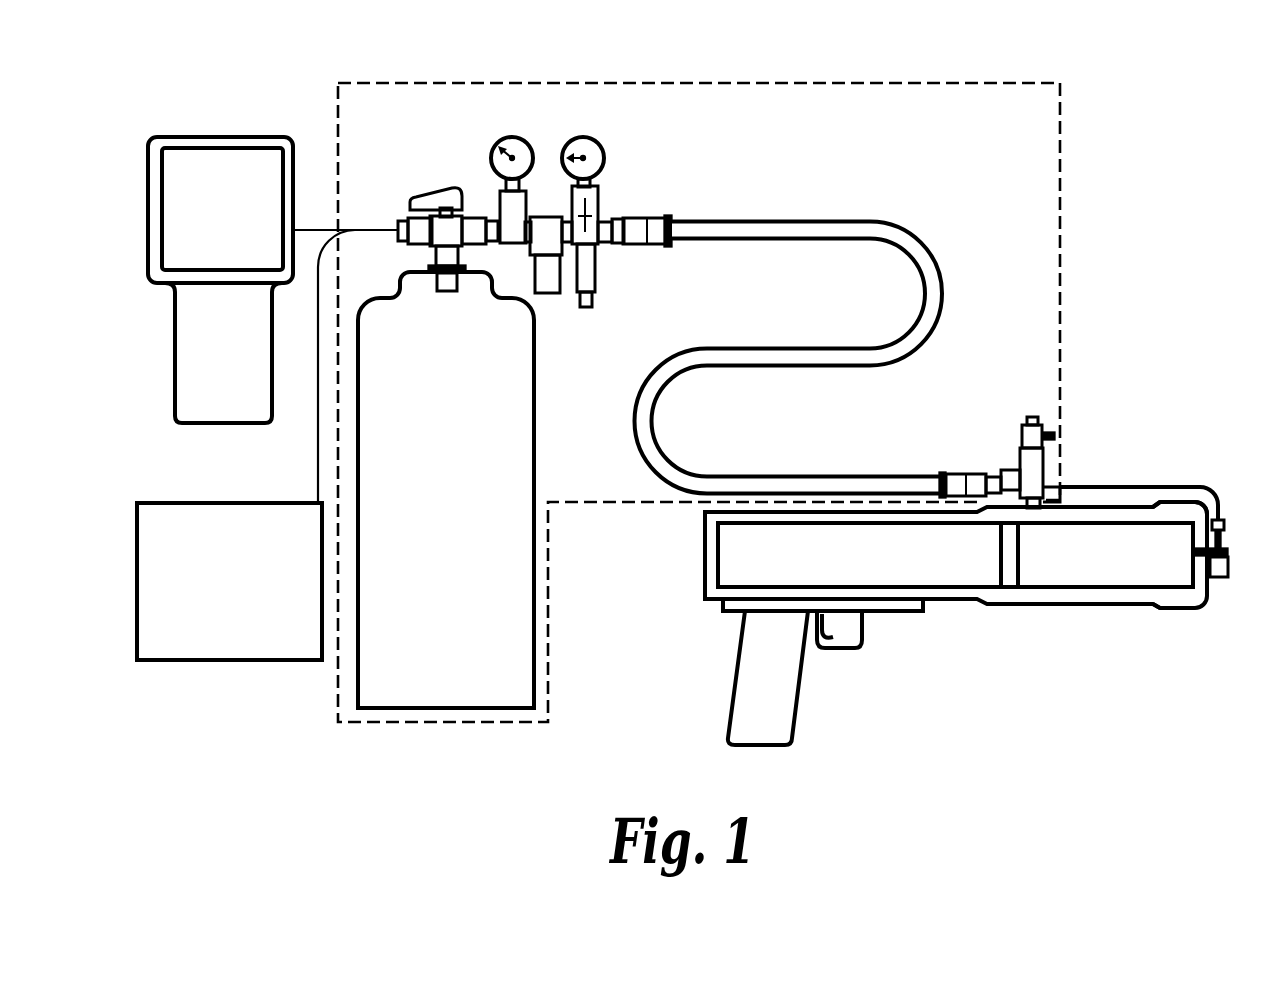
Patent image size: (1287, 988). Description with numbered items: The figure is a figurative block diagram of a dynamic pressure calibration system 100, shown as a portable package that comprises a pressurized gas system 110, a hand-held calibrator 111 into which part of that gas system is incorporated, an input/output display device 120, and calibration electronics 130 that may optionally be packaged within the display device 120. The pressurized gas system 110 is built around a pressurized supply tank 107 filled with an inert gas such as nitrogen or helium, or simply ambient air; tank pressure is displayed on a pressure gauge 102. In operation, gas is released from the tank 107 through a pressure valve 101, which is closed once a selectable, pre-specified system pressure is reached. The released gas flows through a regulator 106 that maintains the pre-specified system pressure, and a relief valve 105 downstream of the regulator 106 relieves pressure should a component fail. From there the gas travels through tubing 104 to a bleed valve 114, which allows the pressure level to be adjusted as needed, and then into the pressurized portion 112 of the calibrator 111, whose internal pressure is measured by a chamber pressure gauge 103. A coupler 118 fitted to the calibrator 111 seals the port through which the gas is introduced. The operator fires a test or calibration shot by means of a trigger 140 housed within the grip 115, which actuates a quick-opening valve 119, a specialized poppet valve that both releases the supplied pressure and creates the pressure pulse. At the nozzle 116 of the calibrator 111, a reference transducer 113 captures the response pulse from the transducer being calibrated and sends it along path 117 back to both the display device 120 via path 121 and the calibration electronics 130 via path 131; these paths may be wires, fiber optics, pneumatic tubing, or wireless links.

The dynamic pressure calibration system 100 is at (463, 64).
The pressure valve 101 is at (418, 200).
The pressure gauge 102 is at (490, 152).
The chamber pressure gauge 103 is at (604, 161).
The tubing 104 is at (913, 219).
The relief valve 105 is at (603, 280).
The regulator 106 is at (553, 296).
The pressurized supply tank 107 is at (535, 684).
The pressurized gas system 110 is at (849, 84).
The hand-held calibrator 111 is at (691, 557).
The pressurized portion 112 is at (1073, 572).
The reference transducer 113 is at (1223, 527).
The bleed valve 114 is at (1055, 436).
The grip 115 is at (812, 690).
The nozzle 116 is at (1210, 582).
The path 117 is at (1097, 486).
The coupler 118 is at (1197, 506).
The quick-opening valve 119 is at (1000, 563).
The input/output (I-O)/display device 120 is at (196, 137).
The path 121 is at (321, 228).
The calibration electronics 130 is at (229, 662).
The path 131 is at (318, 468).
The trigger 140 is at (824, 633).